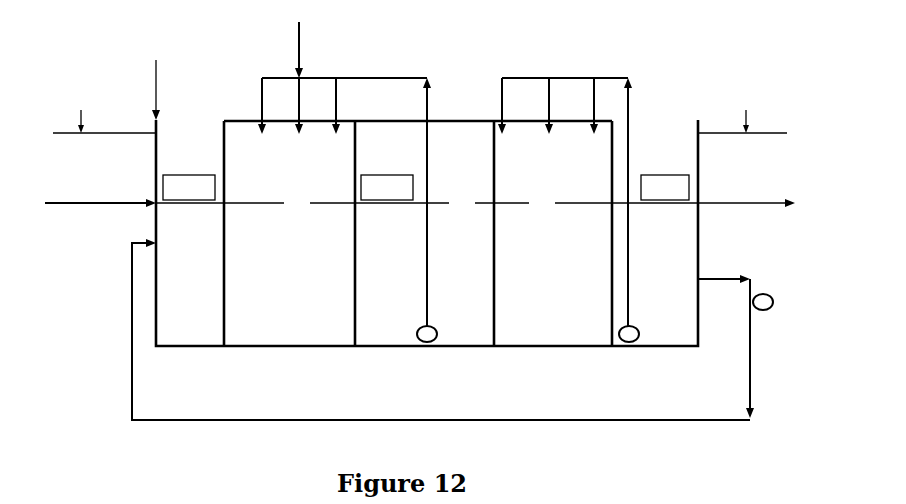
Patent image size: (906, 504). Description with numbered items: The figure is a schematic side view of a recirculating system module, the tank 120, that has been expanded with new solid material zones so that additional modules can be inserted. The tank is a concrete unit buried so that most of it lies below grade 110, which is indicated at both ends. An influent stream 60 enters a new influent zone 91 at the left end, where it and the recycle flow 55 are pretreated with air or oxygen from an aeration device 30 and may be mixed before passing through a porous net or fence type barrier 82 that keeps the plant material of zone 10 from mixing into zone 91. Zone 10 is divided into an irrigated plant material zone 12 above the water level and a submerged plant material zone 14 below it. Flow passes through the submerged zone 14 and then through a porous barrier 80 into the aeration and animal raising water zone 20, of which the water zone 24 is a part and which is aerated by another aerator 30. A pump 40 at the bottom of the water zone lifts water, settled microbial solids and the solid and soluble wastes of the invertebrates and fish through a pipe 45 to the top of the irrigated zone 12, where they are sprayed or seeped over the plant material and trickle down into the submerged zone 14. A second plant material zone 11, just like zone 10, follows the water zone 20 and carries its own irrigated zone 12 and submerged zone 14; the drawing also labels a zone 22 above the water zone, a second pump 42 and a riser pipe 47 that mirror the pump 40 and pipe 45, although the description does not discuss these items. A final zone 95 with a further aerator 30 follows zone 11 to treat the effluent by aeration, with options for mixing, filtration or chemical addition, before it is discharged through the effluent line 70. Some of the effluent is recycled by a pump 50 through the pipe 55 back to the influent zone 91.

The plant material zone 10 is at (231, 203).
The second plant material zone 11 is at (513, 203).
The irrigated plant material zone 12 is at (443, 126).
The submerged plant material zone 14 is at (426, 265).
The aeration and animal raising water zone 20 is at (391, 203).
The upper zone 22 is at (390, 153).
The water zone 24 is at (472, 233).
The aerator 30 is at (426, 187).
The pump 40 is at (441, 335).
The pump 42 is at (644, 335).
The pipe 45 is at (439, 206).
The recycle line 47 is at (639, 206).
The pump 50 is at (777, 304).
The pipe 55 is at (454, 329).
The influent stream 60 is at (177, 117).
The effluent line 70 is at (675, 213).
The porous barrier 80 is at (367, 233).
The porous net or fence type barrier 82 is at (418, 233).
The influent zone 91 is at (427, 233).
The final zone 95 is at (681, 233).
The grade 110 is at (420, 108).
The tank 120 is at (155, 78).